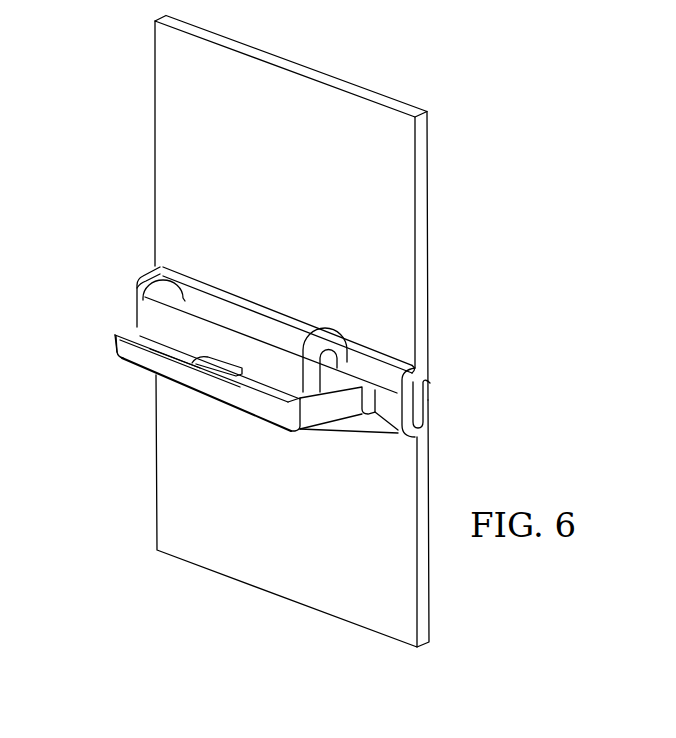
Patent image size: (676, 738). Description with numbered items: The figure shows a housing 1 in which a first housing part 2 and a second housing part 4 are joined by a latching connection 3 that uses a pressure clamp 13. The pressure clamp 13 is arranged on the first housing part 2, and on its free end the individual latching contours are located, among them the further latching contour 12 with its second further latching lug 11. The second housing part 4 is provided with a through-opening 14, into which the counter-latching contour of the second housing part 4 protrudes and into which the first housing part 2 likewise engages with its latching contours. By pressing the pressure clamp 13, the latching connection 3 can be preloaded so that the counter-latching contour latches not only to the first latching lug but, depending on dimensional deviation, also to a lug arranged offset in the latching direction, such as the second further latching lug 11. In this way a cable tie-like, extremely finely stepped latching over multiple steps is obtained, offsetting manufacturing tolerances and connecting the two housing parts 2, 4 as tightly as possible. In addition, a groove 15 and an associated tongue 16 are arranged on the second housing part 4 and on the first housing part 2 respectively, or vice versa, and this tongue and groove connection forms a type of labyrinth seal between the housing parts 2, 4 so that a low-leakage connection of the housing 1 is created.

The housing 1 is at (468, 275).
The first housing part 2 is at (315, 217).
The latching connection 3 is at (120, 294).
The second housing part 4 is at (300, 546).
The second further latching lug 11 is at (182, 360).
The further latching contour 12 is at (210, 377).
The pressure clamp 13 is at (182, 297).
The through-opening 14 is at (137, 327).
The groove 15 is at (427, 425).
The tongue 16 is at (427, 383).